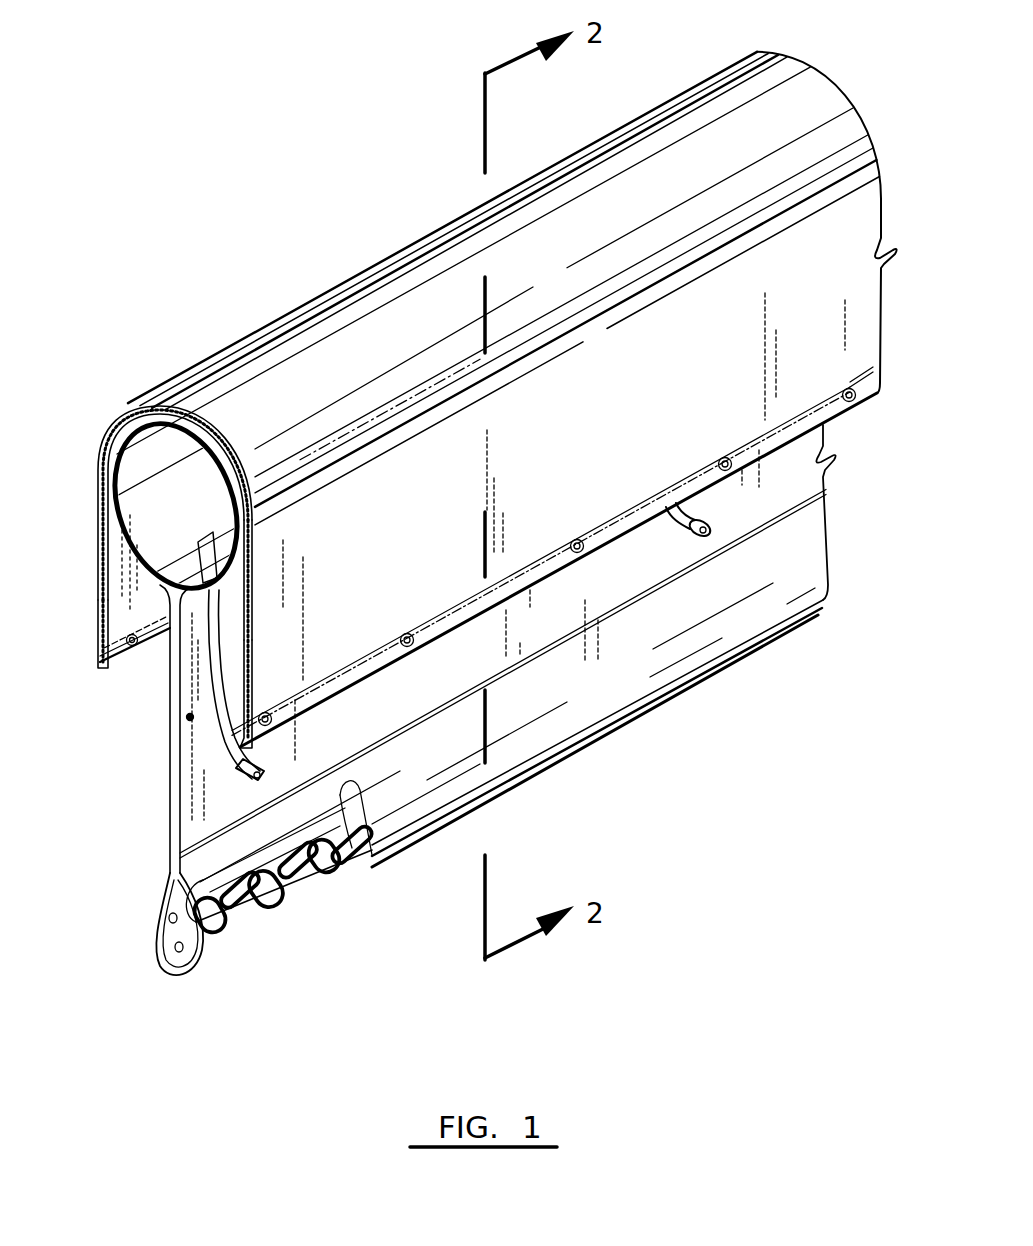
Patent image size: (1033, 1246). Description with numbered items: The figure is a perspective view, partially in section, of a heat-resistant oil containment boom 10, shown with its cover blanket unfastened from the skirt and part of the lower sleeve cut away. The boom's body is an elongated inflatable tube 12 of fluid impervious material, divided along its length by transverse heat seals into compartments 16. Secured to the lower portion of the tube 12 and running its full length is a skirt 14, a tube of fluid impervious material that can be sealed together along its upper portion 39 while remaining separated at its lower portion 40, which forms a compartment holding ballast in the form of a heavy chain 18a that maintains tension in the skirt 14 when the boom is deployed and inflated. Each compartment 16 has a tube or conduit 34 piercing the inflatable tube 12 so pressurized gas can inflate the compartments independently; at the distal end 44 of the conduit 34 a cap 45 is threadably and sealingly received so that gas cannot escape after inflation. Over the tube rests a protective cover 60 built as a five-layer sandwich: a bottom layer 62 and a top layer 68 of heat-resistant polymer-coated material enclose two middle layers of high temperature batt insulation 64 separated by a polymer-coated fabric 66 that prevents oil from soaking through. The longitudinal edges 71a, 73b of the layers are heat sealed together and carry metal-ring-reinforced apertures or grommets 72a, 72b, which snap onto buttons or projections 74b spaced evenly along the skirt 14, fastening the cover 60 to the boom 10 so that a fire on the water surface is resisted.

The oil containment boom 10 is at (333, 252).
The inflatable tube 12 is at (150, 548).
The skirt 14 is at (471, 673).
The compartments 16 is at (192, 501).
The heavy chain 18a is at (254, 922).
The tube or conduit 34 is at (250, 590).
The upper portion of skirt 39 is at (168, 726).
The lower portion of skirt 40 is at (456, 762).
The distal end of tube 44 is at (262, 770).
The cap 45 is at (258, 783).
The protective cover 60 is at (92, 478).
The bottom layer 62 is at (124, 588).
The batt insulation layers 64 is at (102, 615).
The polymer-coated fabric 66 is at (247, 665).
The top layer 68 is at (401, 501).
The longitudinal edge 71a is at (157, 632).
The aperture or grommet 72a is at (126, 648).
The apertures or grommets 72b is at (849, 388).
The longitudinal edge 73b is at (532, 582).
The button or projection 74b is at (190, 748).